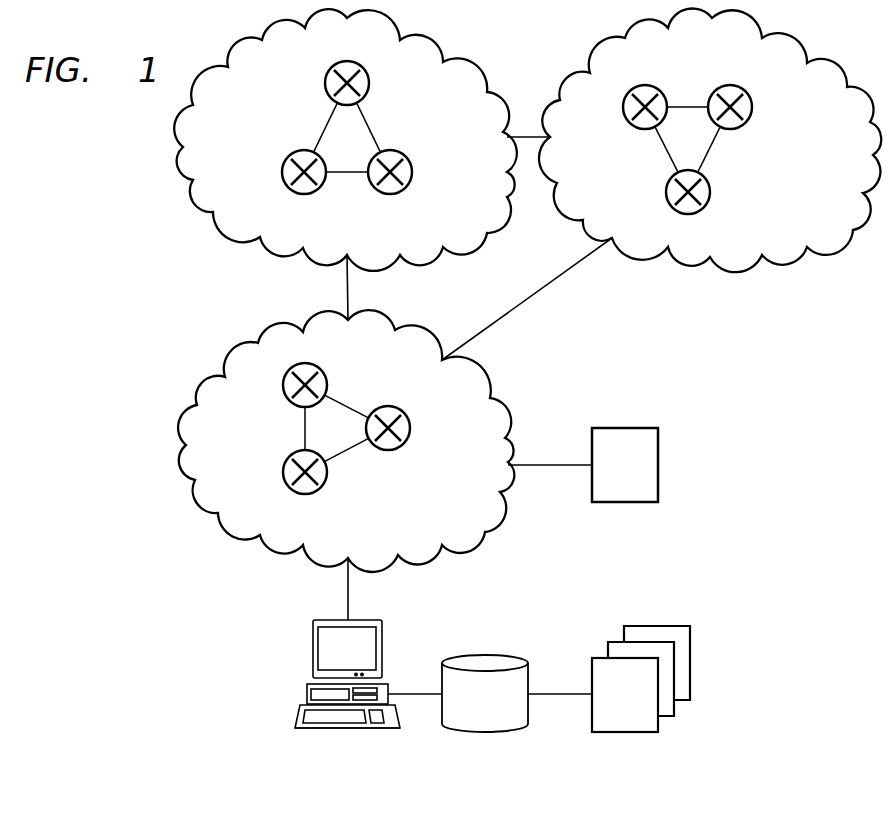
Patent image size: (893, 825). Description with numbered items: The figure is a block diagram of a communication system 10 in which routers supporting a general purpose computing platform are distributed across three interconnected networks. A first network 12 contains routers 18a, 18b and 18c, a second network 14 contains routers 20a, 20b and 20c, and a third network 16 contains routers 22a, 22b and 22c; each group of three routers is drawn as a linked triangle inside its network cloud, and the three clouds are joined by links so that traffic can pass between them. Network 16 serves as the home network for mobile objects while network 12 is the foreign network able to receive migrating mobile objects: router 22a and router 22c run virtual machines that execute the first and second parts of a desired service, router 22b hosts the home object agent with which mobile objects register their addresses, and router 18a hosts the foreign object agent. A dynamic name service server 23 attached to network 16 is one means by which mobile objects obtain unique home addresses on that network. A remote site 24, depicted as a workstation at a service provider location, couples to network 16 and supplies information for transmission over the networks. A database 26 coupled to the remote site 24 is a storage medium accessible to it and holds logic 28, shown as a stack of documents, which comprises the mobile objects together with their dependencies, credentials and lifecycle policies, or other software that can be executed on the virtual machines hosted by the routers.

The communication system 10 is at (112, 197).
The network 12 is at (738, 272).
The network 14 is at (183, 146).
The network 16 is at (186, 445).
The router 18a is at (711, 193).
The router 18b is at (752, 104).
The router 18c is at (650, 86).
The router 20a is at (282, 172).
The router 20b is at (412, 176).
The router 20c is at (370, 86).
The router 22a is at (283, 473).
The router 22b is at (411, 430).
The router 22c is at (283, 387).
The dynamic name service (DNS) server 23 is at (625, 503).
The remote site 24 is at (348, 733).
The database 26 is at (490, 733).
The logic 28 is at (625, 733).